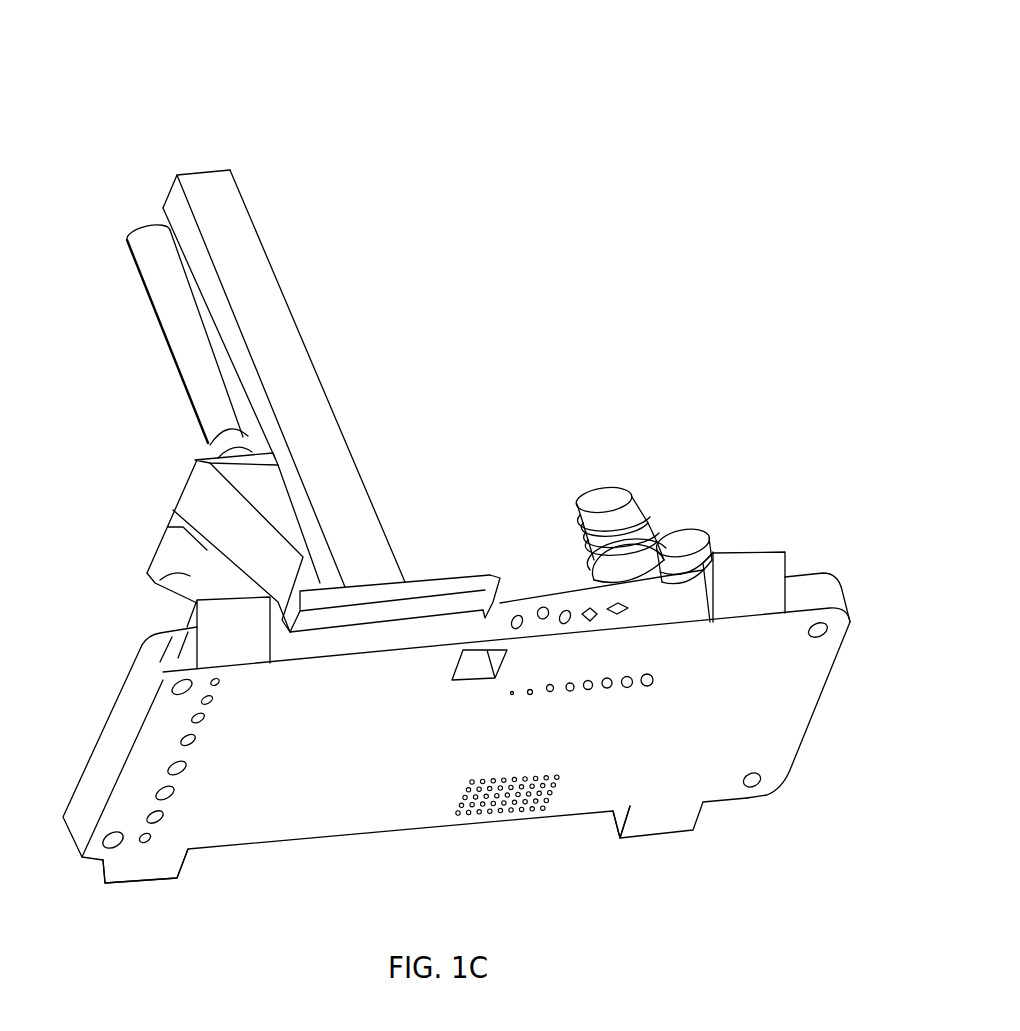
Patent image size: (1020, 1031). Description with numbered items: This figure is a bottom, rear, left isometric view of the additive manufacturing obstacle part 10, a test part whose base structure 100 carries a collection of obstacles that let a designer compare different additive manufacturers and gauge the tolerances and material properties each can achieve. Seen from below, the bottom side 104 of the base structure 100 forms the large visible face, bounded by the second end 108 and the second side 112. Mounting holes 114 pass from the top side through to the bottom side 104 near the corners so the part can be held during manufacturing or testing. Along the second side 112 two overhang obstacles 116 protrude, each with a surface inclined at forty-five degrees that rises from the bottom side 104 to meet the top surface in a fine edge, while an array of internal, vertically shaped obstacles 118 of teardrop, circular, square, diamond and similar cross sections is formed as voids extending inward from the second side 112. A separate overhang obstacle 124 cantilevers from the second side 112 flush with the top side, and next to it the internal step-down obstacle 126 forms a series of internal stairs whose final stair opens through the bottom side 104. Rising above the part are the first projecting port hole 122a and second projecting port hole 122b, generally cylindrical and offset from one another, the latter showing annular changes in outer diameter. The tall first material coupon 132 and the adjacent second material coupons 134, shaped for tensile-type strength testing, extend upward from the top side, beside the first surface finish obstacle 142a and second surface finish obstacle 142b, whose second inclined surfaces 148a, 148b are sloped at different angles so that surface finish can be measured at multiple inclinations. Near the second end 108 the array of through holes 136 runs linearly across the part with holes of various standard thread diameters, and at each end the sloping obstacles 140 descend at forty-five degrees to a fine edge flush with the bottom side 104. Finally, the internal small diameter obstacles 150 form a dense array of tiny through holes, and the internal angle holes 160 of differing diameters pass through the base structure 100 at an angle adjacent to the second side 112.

The additive manufacturing obstacle part 10 is at (92, 403).
The base structure 100 is at (255, 803).
The bottom side 104 is at (355, 802).
The second end 108 is at (85, 823).
The second side 112 is at (484, 617).
The mounting holes 114 is at (158, 685).
The overhang obstacles 116 is at (250, 647).
The array of internal, vertically shaped obstacles 118 is at (550, 604).
The first projecting port hole 122a is at (684, 556).
The second projecting port hole 122b is at (586, 493).
The overhang obstacle 124 is at (347, 618).
The internal step-down obstacle 126 is at (465, 680).
The first material coupon 132 is at (222, 207).
The second material coupons 134 is at (140, 242).
The array of through holes 136 is at (174, 803).
The sloping obstacles 140 is at (146, 875).
The first surface finish obstacle 142a is at (173, 557).
The second surface finish obstacle 142b is at (200, 508).
The second inclined surface 148a is at (190, 573).
The second inclined surface 148b is at (223, 520).
The internal small diameter obstacles 150 is at (518, 797).
The internal angle holes 160 is at (600, 697).